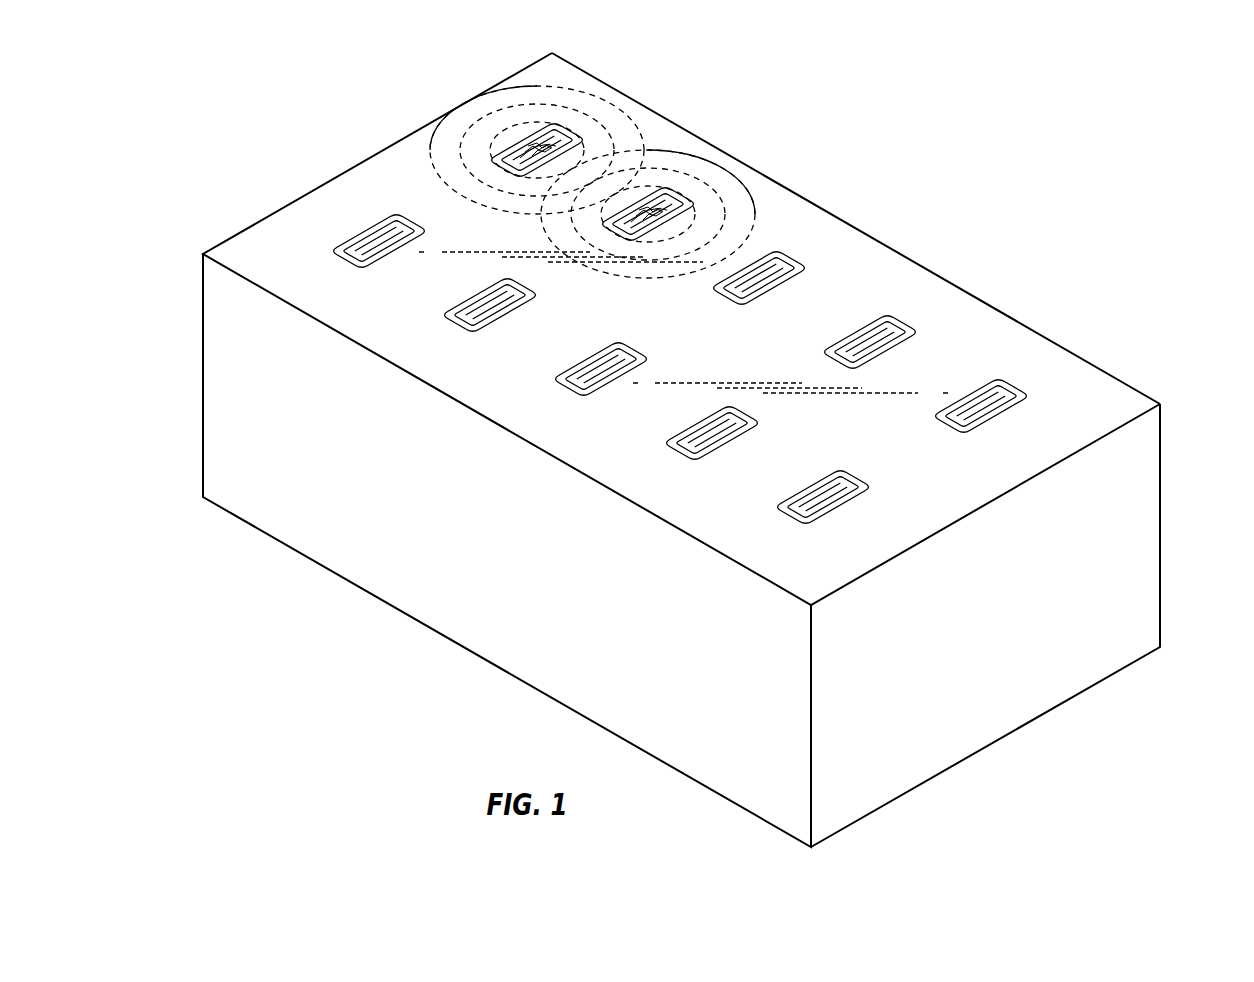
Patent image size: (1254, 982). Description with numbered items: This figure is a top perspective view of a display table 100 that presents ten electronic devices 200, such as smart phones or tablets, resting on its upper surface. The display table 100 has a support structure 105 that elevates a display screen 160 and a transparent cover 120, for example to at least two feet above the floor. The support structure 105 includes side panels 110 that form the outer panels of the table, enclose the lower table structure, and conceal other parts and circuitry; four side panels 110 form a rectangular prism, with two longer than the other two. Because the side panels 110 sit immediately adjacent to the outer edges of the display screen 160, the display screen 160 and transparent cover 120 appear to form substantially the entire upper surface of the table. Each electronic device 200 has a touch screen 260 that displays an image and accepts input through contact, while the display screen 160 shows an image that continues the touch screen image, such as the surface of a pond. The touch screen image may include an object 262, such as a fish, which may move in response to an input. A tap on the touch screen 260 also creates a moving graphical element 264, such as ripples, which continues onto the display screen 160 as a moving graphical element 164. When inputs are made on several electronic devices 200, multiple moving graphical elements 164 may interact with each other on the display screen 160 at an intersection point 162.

The display table 100 is at (1014, 205).
The support structure 105 is at (170, 352).
The side panels 110 is at (332, 555).
The transparent cover 120 is at (362, 175).
The display screen 160 is at (1055, 374).
The intersection point 162 is at (647, 152).
The moving graphical element 164 is at (585, 98).
The electronic device 200 is at (462, 150).
The touch screen 260 is at (388, 250).
The object 262 is at (542, 142).
The moving graphical element 264 is at (498, 145).